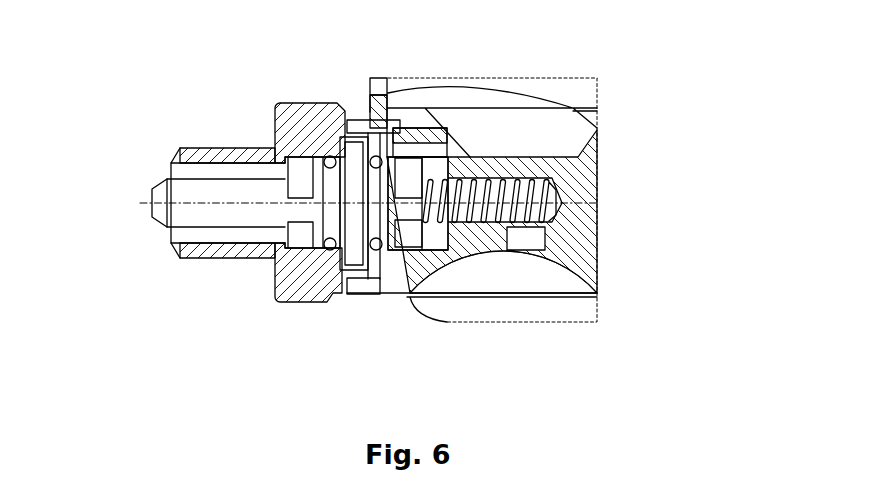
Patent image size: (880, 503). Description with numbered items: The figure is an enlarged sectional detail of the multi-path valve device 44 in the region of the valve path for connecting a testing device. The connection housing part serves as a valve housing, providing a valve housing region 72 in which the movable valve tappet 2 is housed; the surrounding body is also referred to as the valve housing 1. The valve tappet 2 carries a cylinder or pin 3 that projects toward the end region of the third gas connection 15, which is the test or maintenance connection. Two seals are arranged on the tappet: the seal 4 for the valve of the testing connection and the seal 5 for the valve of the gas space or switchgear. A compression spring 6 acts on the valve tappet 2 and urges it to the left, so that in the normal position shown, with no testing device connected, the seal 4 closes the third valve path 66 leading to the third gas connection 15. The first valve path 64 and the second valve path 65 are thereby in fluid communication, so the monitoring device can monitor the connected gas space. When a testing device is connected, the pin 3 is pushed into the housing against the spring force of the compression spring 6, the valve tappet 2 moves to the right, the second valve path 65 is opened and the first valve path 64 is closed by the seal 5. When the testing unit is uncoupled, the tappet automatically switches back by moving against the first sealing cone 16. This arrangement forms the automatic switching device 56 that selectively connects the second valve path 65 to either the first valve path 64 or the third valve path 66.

The valve housing 1 is at (575, 233).
The valve tappet 2 is at (238, 188).
The pin 3 is at (160, 212).
The seal 4 is at (322, 252).
The seal 5 is at (357, 284).
The compression spring 6 is at (547, 182).
The third gas connection 15 is at (170, 167).
The first sealing cone 16 is at (376, 153).
The multi-path valve device 44 is at (537, 52).
The automatic switching device 56 is at (245, 292).
The first valve path 64 is at (527, 247).
The second valve path 65 is at (435, 135).
The third valve path 66 is at (165, 169).
The valve housing region 72 is at (635, 62).